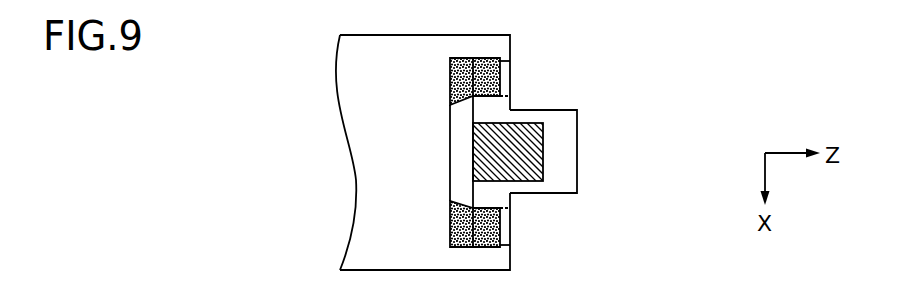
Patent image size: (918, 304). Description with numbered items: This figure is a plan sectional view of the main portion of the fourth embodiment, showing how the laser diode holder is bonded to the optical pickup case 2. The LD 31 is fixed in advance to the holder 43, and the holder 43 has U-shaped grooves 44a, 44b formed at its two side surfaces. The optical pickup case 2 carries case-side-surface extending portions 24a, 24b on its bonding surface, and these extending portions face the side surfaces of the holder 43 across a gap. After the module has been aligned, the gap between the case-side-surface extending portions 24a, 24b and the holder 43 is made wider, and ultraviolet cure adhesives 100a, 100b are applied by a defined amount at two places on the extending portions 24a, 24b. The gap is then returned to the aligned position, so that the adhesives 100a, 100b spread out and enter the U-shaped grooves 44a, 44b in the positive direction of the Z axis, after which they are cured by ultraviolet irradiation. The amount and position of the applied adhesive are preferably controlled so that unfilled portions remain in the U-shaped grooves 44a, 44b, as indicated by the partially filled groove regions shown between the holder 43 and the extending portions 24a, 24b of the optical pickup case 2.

The optical pickup case 2 is at (363, 168).
The case-side-surface extending portion 24a is at (502, 47).
The case-side-surface extending portion 24b is at (500, 257).
The ultraviolet cure adhesive 100a is at (450, 78).
The ultraviolet cure adhesive 100b is at (450, 226).
The U-shaped groove 44a is at (505, 79).
The U-shaped groove 44b is at (505, 228).
The holder 43 is at (571, 123).
The LD 31 is at (543, 167).